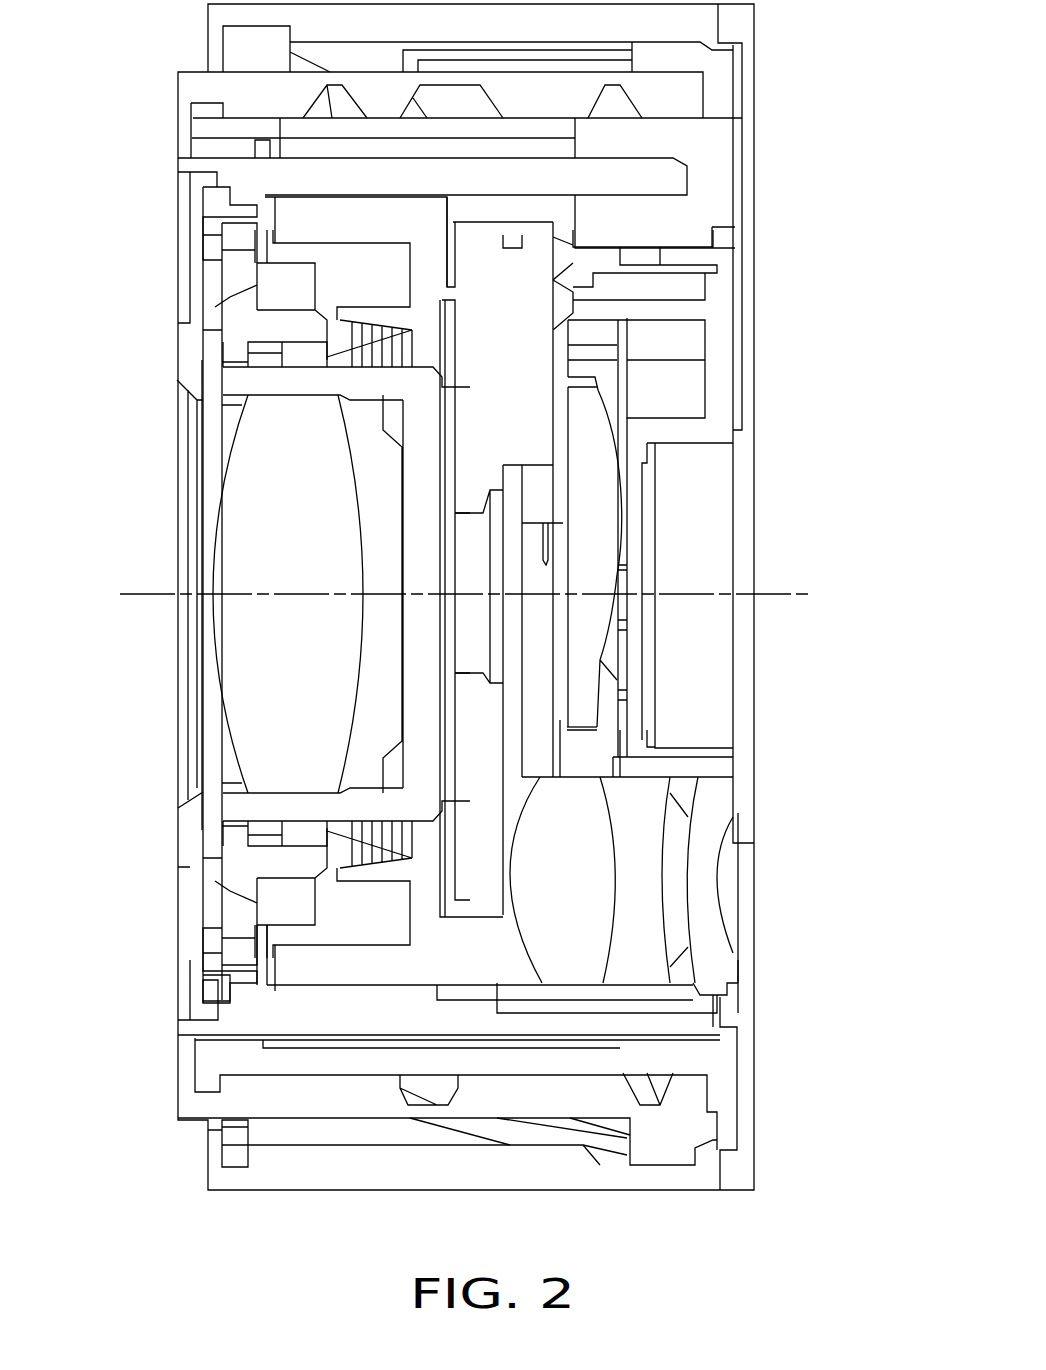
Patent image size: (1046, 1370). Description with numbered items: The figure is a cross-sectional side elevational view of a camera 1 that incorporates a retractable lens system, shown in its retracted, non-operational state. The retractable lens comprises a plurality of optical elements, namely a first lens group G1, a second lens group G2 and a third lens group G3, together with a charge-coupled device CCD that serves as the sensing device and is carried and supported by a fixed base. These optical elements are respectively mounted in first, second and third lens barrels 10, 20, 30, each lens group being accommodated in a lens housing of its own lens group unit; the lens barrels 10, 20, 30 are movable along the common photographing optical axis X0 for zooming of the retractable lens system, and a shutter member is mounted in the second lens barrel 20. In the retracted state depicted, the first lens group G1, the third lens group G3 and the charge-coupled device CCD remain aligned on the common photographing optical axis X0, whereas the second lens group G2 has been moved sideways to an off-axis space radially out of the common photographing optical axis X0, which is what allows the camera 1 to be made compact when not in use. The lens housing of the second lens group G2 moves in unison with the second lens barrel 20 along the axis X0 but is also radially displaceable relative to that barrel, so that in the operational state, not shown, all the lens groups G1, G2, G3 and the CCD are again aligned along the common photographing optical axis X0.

The camera 1 is at (755, 158).
The first lens barrel 10 is at (277, 332).
The second lens barrel 20 is at (388, 1008).
The third lens barrel 30 is at (583, 355).
The first lens group G1 is at (293, 567).
The second lens group G2 is at (673, 882).
The third lens group G3 is at (585, 503).
The charge-coupled device CCD is at (700, 562).
The common photographing optical axis X0 is at (485, 592).